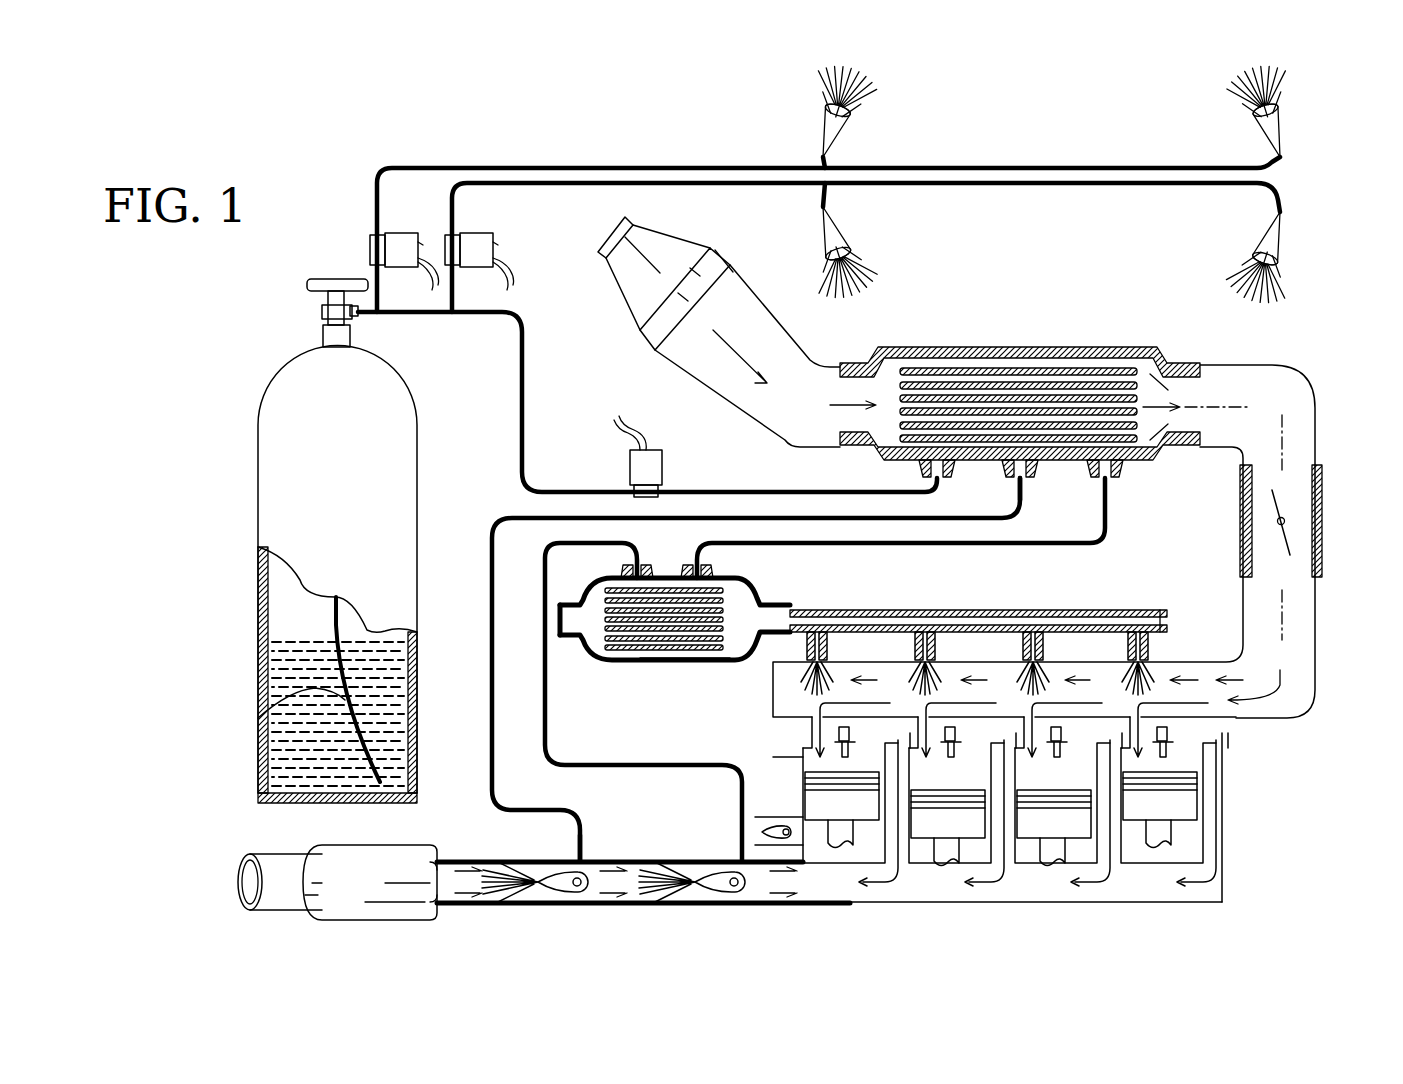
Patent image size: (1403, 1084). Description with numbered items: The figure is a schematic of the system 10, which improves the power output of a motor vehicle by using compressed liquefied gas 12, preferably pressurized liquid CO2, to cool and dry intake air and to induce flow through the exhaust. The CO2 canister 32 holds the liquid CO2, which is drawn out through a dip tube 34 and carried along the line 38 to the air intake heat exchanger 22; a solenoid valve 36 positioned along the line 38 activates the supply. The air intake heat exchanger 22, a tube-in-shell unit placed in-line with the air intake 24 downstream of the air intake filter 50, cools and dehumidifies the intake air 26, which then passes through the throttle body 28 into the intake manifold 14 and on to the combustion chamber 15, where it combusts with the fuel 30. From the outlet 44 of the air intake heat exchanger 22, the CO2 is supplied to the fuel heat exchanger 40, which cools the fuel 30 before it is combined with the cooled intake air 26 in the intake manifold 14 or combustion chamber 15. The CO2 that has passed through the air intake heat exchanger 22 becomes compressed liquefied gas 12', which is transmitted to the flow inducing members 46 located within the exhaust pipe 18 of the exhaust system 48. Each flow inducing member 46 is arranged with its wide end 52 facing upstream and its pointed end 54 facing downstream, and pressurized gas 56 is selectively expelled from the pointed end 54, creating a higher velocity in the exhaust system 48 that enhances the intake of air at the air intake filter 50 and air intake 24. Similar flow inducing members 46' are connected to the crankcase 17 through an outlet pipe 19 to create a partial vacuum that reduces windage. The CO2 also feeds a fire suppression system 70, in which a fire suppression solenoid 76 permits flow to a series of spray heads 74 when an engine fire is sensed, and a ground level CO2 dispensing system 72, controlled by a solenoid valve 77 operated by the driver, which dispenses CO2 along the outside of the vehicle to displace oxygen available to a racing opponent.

The system 10 is at (345, 163).
The compressed liquefied gas 12 is at (288, 702).
The compressed liquefied gas 12' is at (726, 669).
The intake manifold 14 is at (1268, 713).
The combustion chamber 15 is at (803, 757).
The crankcase 17 is at (1190, 840).
The exhaust pipe 18 is at (648, 862).
The outlet pipe 19 is at (790, 872).
The air intake heat exchanger 22 is at (1073, 345).
The air intake 24 is at (715, 390).
The intake air 26 is at (1255, 407).
The throttle body 28 is at (1300, 513).
The fuel 30 is at (735, 612).
The CO2 canister 32 is at (270, 495).
The dip tube 34 is at (258, 718).
The solenoid valve 36 is at (662, 468).
The line 38 is at (528, 388).
The fuel heat exchanger 40 is at (683, 660).
The outlet 44 is at (1103, 488).
The flow inducing members 46 is at (629, 862).
The flow inducing members 46' is at (771, 810).
The exhaust system 48 is at (1193, 912).
The air intake filter 50 is at (617, 283).
The wide end 52 is at (583, 860).
The pointed end 54 is at (553, 885).
The pressurized gas 56 is at (495, 885).
The fire suppression system 70 is at (1070, 186).
The ground level CO2 dispensing system 72 is at (838, 138).
The spray heads 74 is at (838, 220).
The fire suppression solenoid 76 is at (478, 236).
The solenoid valve 77 is at (372, 243).